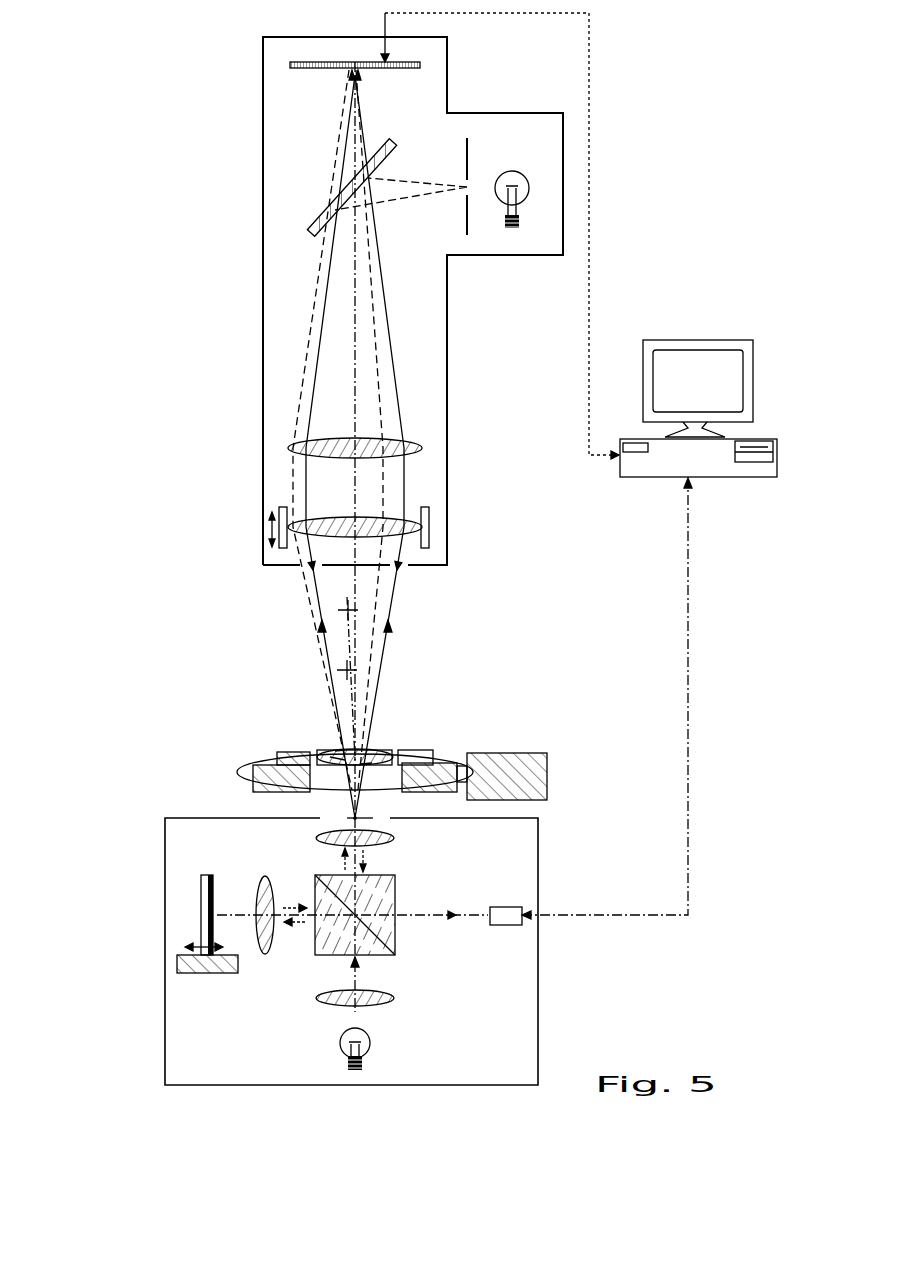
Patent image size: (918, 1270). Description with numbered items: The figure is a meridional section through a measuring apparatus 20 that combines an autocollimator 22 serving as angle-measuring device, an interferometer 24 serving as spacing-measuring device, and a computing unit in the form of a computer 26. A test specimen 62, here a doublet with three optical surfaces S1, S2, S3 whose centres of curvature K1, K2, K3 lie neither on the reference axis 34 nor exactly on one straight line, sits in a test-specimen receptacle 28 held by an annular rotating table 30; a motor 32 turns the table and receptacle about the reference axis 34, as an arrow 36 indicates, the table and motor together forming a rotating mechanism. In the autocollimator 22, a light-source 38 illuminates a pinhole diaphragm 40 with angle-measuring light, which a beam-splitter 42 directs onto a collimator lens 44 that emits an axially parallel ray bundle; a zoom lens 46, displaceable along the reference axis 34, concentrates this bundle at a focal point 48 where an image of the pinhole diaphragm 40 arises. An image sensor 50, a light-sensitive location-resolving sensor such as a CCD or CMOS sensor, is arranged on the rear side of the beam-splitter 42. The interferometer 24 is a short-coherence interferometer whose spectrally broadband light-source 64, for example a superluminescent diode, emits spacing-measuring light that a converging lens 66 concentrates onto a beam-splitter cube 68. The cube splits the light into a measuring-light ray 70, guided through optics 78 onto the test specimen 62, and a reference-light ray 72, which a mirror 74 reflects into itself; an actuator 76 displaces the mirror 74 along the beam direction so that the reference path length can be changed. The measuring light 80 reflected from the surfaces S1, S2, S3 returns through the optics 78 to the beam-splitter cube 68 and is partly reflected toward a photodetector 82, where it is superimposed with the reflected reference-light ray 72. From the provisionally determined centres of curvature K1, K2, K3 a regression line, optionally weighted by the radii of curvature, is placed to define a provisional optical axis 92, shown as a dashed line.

The measuring apparatus 20 is at (215, 559).
The autocollimator 22 is at (254, 163).
The interferometer 24 is at (155, 908).
The computer 26 is at (658, 478).
The test-specimen receptacle 28 is at (413, 750).
The rotating table 30 is at (440, 763).
The motor 32 is at (498, 755).
The reference axis 34 is at (354, 298).
The arrow 36 is at (262, 756).
The light-source 38 is at (540, 193).
The pinhole diaphragm 40 is at (472, 162).
The beam-splitter 42 is at (316, 224).
The collimator lens 44 is at (407, 446).
The zoom lens 46 is at (383, 522).
The focal point 48 is at (346, 818).
The image sensor 50 is at (307, 69).
The test specimen 62 is at (336, 766).
The light-source 64 is at (380, 1044).
The converging lens 66 is at (378, 992).
The beam-splitter cube 68 is at (396, 880).
The measuring-light ray 70 is at (343, 858).
The reference-light ray 72 is at (300, 925).
The mirror 74 is at (214, 890).
The actuator 76 is at (194, 973).
The optics 78 is at (394, 839).
The reflected measuring light 80 is at (368, 862).
The photodetector 82 is at (504, 907).
The provisional optical axis 92 is at (345, 647).
The centre of curvature K1 is at (363, 817).
The centre of curvature K2 is at (345, 670).
The centre of curvature K3 is at (346, 610).
The optical surface S1 is at (334, 758).
The optical surface S2 is at (341, 750).
The optical surface S3 is at (368, 764).